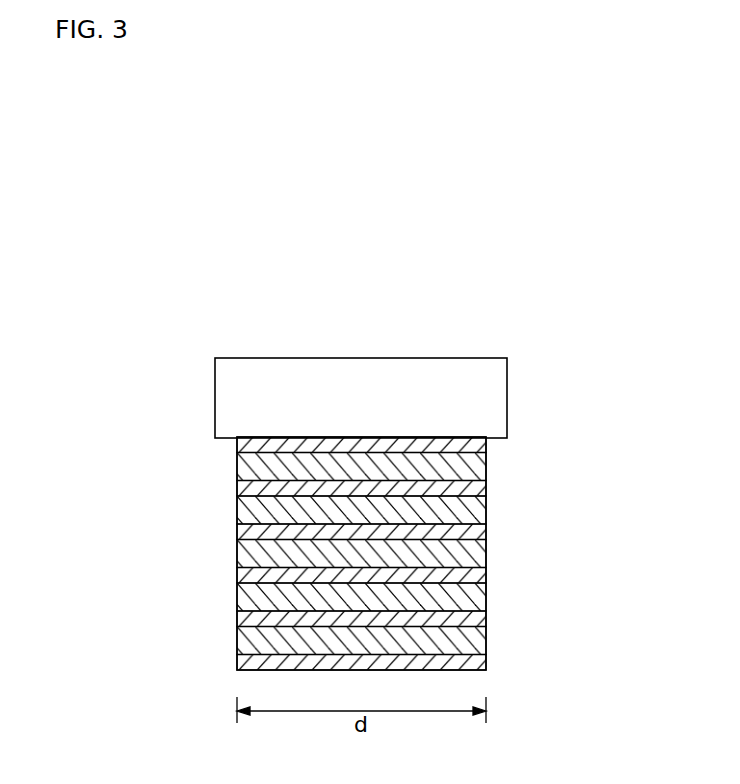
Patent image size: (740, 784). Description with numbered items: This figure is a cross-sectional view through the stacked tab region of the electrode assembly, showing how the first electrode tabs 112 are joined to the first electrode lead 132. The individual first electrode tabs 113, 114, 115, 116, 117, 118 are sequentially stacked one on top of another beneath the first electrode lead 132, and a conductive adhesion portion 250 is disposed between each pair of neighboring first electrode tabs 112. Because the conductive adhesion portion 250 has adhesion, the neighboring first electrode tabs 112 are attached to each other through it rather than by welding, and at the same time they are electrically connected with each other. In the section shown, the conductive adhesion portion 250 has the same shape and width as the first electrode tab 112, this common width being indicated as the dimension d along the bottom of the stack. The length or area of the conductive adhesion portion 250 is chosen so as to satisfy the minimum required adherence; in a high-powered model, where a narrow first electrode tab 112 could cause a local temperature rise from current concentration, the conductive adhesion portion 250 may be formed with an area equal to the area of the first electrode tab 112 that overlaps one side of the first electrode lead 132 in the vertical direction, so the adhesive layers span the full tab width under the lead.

The first electrode lead 132 is at (357, 369).
The first electrode tab 112 is at (592, 429).
The first electrode tab 113 is at (486, 663).
The first electrode tab 114 is at (486, 616).
The first electrode tab 115 is at (486, 574).
The first electrode tab 116 is at (486, 534).
The first electrode tab 117 is at (486, 492).
The first electrode tab 118 is at (486, 446).
The conductive adhesion portion 250 is at (237, 558).